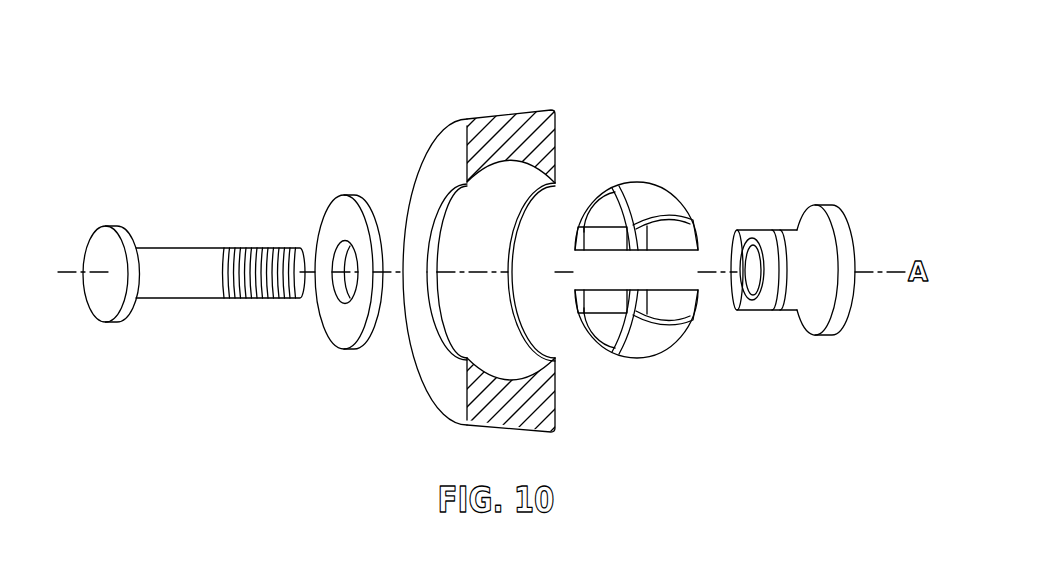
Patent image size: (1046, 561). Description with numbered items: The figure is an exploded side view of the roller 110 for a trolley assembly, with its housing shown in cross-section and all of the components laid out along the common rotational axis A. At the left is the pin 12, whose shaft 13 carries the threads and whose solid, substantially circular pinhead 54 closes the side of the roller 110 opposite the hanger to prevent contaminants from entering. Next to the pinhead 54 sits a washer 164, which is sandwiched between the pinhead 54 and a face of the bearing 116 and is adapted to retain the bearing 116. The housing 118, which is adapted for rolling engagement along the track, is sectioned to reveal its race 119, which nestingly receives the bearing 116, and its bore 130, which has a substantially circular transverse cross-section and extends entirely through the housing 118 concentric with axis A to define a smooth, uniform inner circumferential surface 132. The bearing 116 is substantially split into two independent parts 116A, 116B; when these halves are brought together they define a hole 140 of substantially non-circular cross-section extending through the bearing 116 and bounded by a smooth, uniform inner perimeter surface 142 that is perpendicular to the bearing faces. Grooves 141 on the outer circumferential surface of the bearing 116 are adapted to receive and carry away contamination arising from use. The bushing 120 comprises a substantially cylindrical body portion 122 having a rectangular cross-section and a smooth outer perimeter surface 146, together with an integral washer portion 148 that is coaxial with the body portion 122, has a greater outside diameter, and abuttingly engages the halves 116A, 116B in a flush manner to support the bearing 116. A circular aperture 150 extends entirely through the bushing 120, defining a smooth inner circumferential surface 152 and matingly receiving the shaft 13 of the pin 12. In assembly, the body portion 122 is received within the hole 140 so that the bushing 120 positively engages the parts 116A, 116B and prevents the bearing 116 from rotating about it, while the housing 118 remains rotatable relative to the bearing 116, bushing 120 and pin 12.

The roller 110 is at (395, 78).
The pin 12 is at (218, 240).
The shaft 13 is at (185, 298).
The pinhead 54 is at (108, 226).
The washer 164 is at (343, 195).
The housing 118 is at (507, 105).
The bore 130 is at (469, 200).
The race 119 is at (478, 347).
The inner circumferential surface 132 is at (498, 348).
The bearing 116 is at (635, 178).
The part of the split bearing 116A is at (662, 180).
The part of the split bearing 116B is at (630, 362).
The groove 141 is at (611, 186).
The inner perimeter surface 142 is at (593, 244).
The hole 140 is at (678, 281).
The bushing 120 is at (760, 226).
The body portion 122 is at (782, 316).
The outer perimeter surface 146 is at (782, 228).
The washer portion 148 is at (826, 206).
The aperture 150 is at (740, 268).
The inner circumferential surface 152 is at (740, 310).